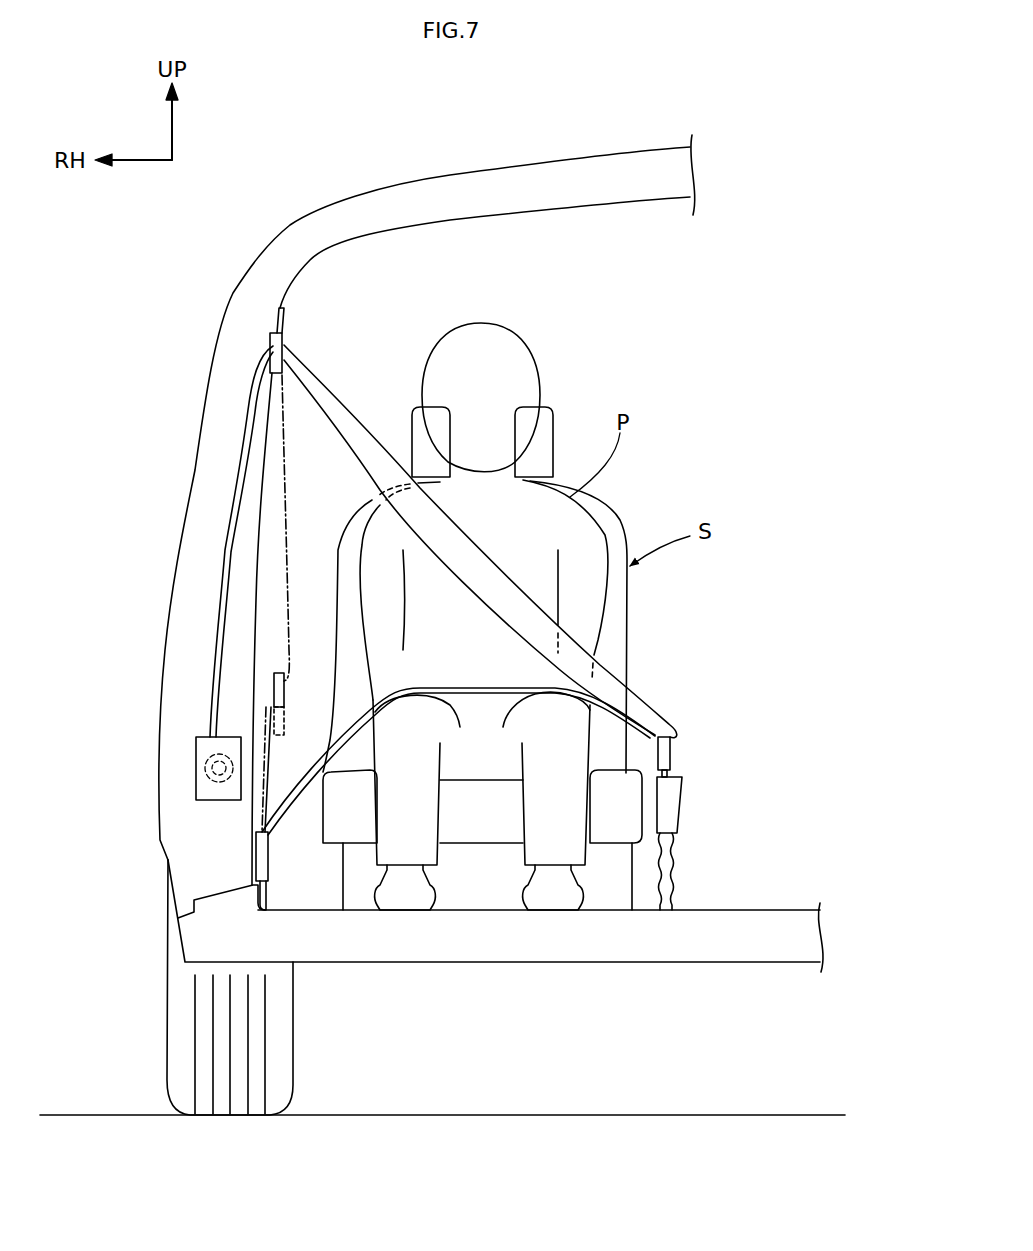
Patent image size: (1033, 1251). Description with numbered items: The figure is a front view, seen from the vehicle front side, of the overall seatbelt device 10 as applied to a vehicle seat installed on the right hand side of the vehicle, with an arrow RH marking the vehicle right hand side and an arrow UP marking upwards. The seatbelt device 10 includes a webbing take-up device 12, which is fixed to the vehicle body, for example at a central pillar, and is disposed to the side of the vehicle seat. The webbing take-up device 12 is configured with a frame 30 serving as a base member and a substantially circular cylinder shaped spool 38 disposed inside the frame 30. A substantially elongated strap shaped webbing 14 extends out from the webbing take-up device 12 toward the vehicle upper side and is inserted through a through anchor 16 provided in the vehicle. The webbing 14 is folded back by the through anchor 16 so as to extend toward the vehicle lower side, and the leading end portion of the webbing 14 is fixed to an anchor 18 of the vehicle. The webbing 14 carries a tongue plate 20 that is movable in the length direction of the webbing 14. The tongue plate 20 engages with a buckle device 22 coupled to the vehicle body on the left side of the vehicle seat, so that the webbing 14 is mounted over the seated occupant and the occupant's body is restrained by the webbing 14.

The seatbelt device 10 is at (367, 366).
The webbing take-up device 12 is at (194, 790).
The webbing 14 is at (276, 556).
The through anchor 16 is at (270, 345).
The anchor 18 is at (270, 858).
The tongue plate 20 is at (274, 673).
The buckle device 22 is at (687, 800).
The frame 30 is at (195, 767).
The spool 38 is at (214, 801).